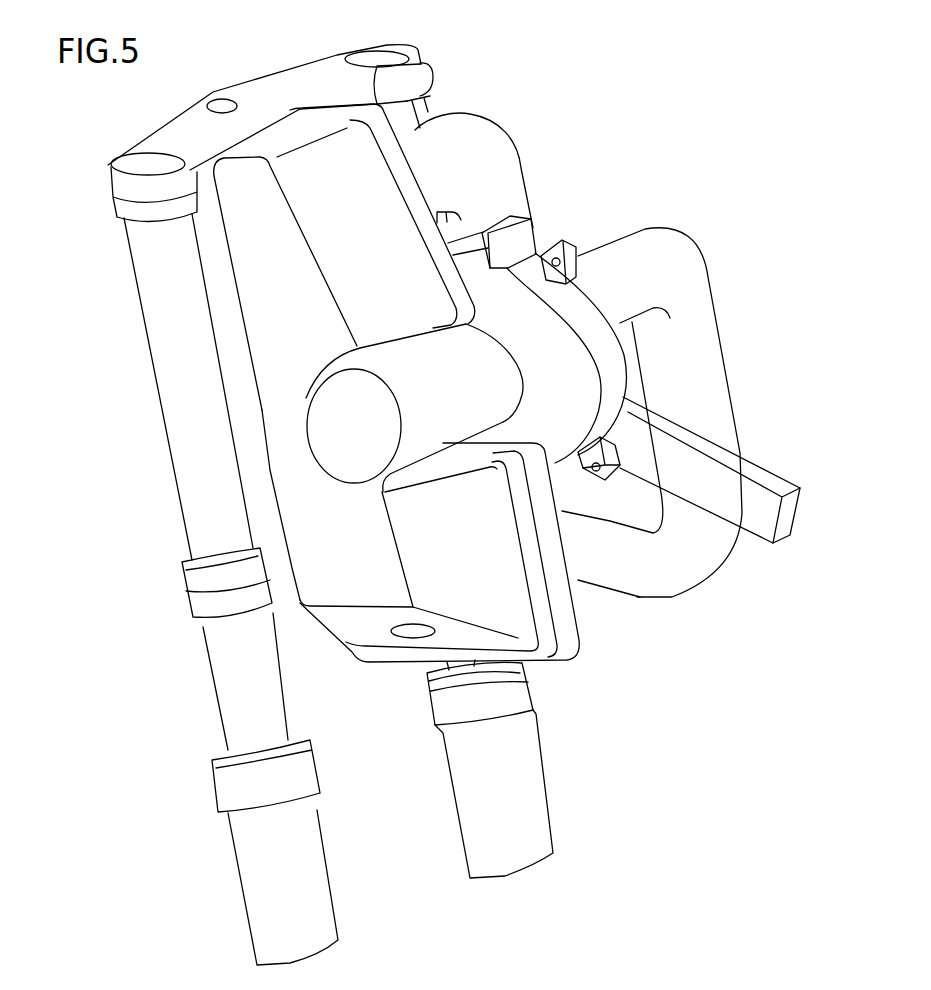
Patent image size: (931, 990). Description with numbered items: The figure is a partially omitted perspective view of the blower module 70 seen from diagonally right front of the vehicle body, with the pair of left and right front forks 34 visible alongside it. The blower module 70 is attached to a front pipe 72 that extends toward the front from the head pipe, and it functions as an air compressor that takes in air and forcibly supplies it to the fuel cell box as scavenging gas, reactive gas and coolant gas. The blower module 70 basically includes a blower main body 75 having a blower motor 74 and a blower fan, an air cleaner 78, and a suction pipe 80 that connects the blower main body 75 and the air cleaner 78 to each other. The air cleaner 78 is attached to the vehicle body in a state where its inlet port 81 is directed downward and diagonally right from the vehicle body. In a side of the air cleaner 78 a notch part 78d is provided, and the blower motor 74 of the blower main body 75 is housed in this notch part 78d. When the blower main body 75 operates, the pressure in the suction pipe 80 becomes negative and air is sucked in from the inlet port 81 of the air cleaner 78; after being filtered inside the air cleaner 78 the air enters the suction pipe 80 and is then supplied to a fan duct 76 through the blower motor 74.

The front forks 34 is at (227, 683).
The blower module 70 is at (552, 192).
The front pipe 72 is at (750, 470).
The blower motor 74 is at (407, 368).
The blower main body 75 is at (573, 308).
The fan duct 76 is at (717, 385).
The air cleaner 78 is at (253, 273).
The notch part 78d is at (317, 371).
The suction pipe 80 is at (487, 143).
The inlet port 81 is at (405, 630).